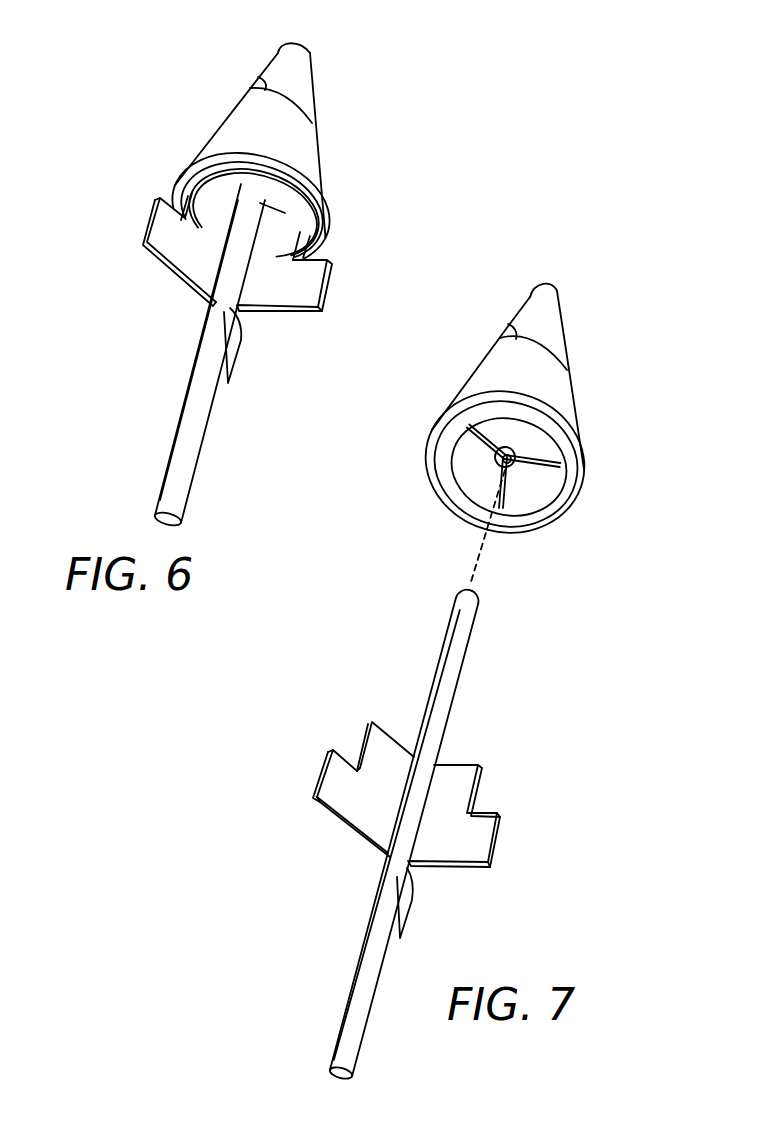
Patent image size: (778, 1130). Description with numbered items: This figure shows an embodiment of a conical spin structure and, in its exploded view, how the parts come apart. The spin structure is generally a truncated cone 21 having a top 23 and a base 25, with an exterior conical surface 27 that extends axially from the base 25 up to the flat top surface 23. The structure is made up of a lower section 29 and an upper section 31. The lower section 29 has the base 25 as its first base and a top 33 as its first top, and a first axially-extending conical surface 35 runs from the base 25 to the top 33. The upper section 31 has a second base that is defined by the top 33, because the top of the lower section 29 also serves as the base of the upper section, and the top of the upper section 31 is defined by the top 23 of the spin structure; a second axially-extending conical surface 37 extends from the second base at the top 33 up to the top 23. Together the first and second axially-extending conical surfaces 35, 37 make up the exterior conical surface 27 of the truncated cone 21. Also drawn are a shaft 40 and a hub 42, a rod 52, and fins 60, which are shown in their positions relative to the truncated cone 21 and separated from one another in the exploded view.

In FIG. 6, the truncated cone 21 is at (322, 97).
In FIG. 7, the truncated cone 21 is at (590, 369).
In FIG. 7, the top 23 is at (558, 288).
In FIG. 6, the base 25 is at (327, 241).
In FIG. 7, the base 25 is at (584, 484).
In FIG. 6, the exterior conical surface 27 is at (298, 162).
In FIG. 6, the lower section 29 is at (218, 127).
In FIG. 7, the lower section 29 is at (477, 367).
In FIG. 6, the upper section 31 is at (276, 56).
In FIG. 7, the upper section 31 is at (527, 302).
In FIG. 6, the top 33 is at (257, 81).
In FIG. 7, the top 33 is at (509, 325).
In FIG. 7, the first axially-extending conical surface 35 is at (550, 408).
In FIG. 7, the second axially-extending conical surface 37 is at (550, 327).
In FIG. 7, the shaft 40 is at (458, 667).
In FIG. 7, the hub 42 is at (496, 458).
In FIG. 6, the rod 52 is at (203, 437).
In FIG. 7, the rod 52 is at (362, 955).
In FIG. 7, the fins 60 is at (330, 809).